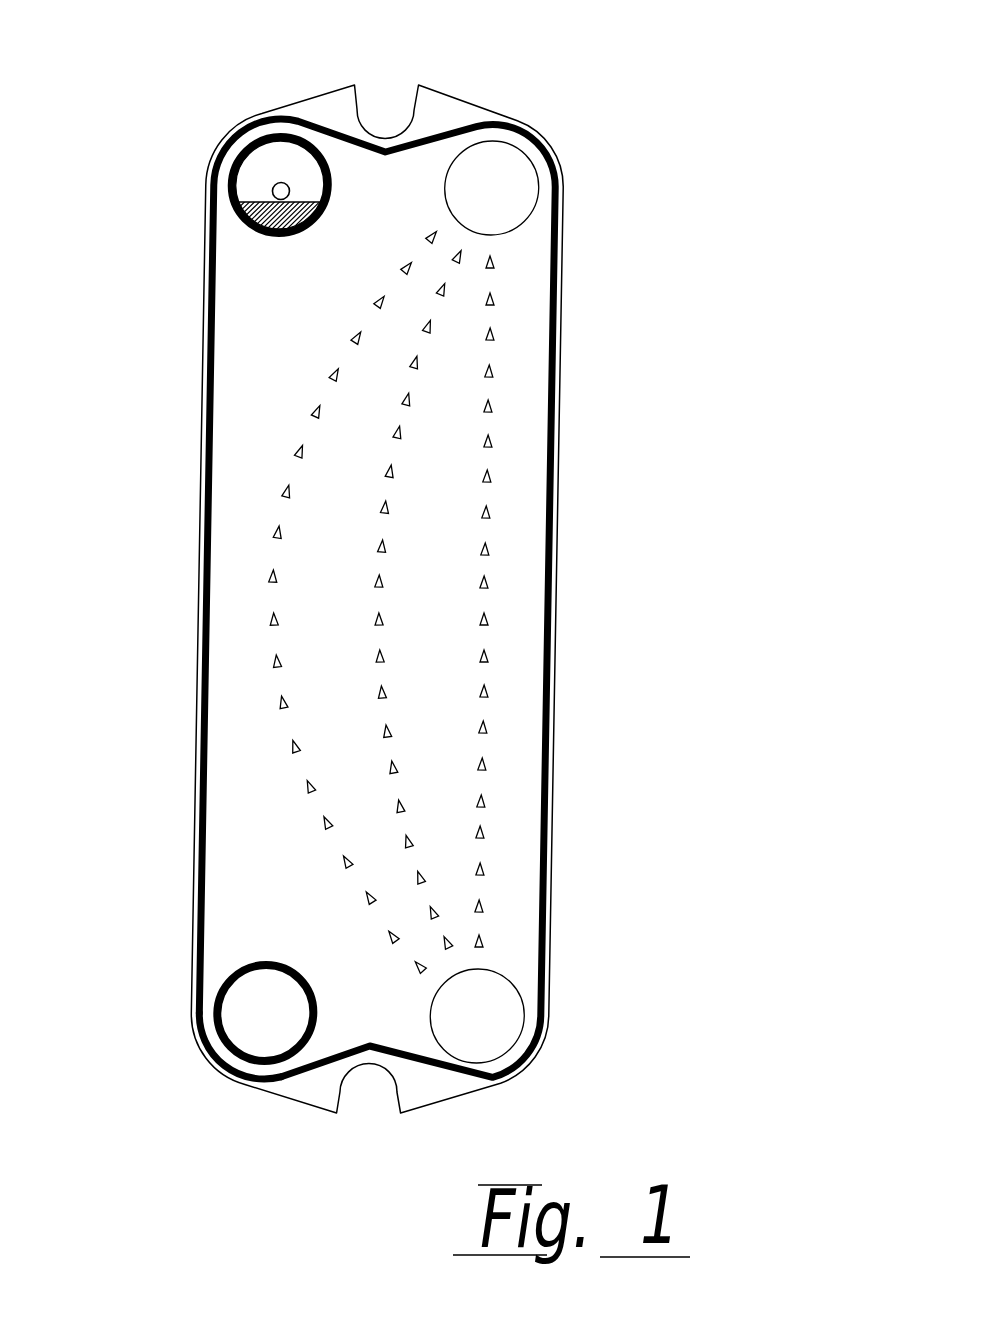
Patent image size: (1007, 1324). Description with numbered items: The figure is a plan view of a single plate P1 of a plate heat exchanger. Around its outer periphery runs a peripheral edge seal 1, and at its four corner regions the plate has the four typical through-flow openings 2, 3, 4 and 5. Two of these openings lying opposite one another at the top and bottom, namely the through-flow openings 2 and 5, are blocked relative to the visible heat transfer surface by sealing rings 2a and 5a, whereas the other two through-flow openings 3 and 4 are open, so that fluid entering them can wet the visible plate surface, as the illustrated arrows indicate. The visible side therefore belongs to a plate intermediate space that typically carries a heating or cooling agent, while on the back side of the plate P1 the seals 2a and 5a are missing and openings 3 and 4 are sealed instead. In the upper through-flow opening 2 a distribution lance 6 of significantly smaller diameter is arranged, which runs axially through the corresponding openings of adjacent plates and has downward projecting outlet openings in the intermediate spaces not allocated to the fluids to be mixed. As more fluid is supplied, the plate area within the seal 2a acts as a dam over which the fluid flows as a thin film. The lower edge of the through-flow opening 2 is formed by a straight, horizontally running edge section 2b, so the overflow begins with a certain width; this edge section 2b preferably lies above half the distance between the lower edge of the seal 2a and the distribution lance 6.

The plate P1 is at (470, 102).
The peripheral edge seal 1 is at (557, 323).
The through-flow opening 2 is at (213, 157).
The sealing ring 2a is at (280, 177).
The edge section 2b is at (223, 193).
The through-flow opening 3 is at (523, 177).
The through-flow opening 4 is at (497, 1022).
The through-flow opening 5 is at (250, 997).
The sealing ring 5a is at (220, 1043).
The distribution lance 6 is at (250, 170).